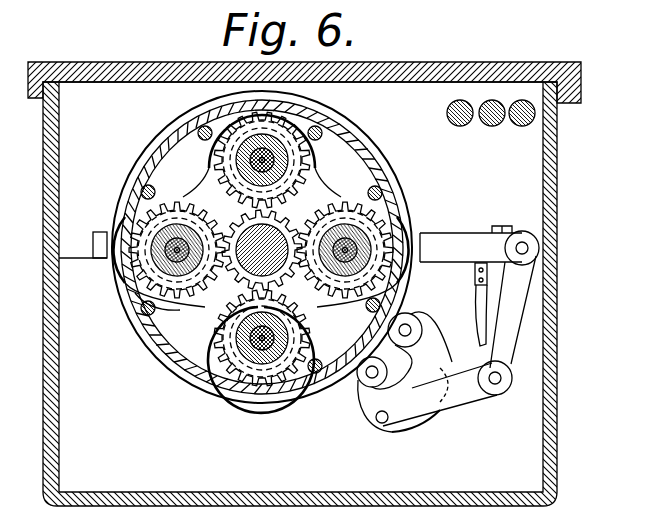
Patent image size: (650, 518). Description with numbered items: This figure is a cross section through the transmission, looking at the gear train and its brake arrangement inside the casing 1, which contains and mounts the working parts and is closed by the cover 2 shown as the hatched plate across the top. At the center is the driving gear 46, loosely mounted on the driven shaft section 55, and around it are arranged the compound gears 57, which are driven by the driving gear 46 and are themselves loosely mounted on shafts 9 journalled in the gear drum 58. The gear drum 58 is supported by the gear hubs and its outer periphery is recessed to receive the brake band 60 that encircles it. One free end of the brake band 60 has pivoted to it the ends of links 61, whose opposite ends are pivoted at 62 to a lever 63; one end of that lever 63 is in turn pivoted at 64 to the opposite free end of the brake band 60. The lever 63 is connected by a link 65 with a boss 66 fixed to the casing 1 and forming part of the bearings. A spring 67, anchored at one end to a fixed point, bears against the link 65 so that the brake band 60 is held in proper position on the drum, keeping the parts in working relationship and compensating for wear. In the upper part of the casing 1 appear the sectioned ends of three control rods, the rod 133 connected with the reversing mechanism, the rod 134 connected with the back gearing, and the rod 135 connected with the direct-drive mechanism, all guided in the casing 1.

The casing 1 is at (556, 218).
The cover 2 is at (502, 80).
The shafts 9 is at (272, 161).
The driving gear 46 is at (283, 232).
The driven shaft section 55 is at (210, 302).
The compound gears 57 is at (190, 200).
The gear drum 58 is at (147, 164).
The brake band 60 is at (160, 136).
The links 61 is at (432, 376).
The pivot 62 is at (382, 423).
The lever 63 is at (460, 398).
The pivot 64 is at (366, 378).
The link 65 is at (502, 330).
The boss 66 is at (100, 235).
The spring 67 is at (485, 322).
The rod 133 is at (535, 115).
The rod 134 is at (447, 113).
The rod 135 is at (492, 127).